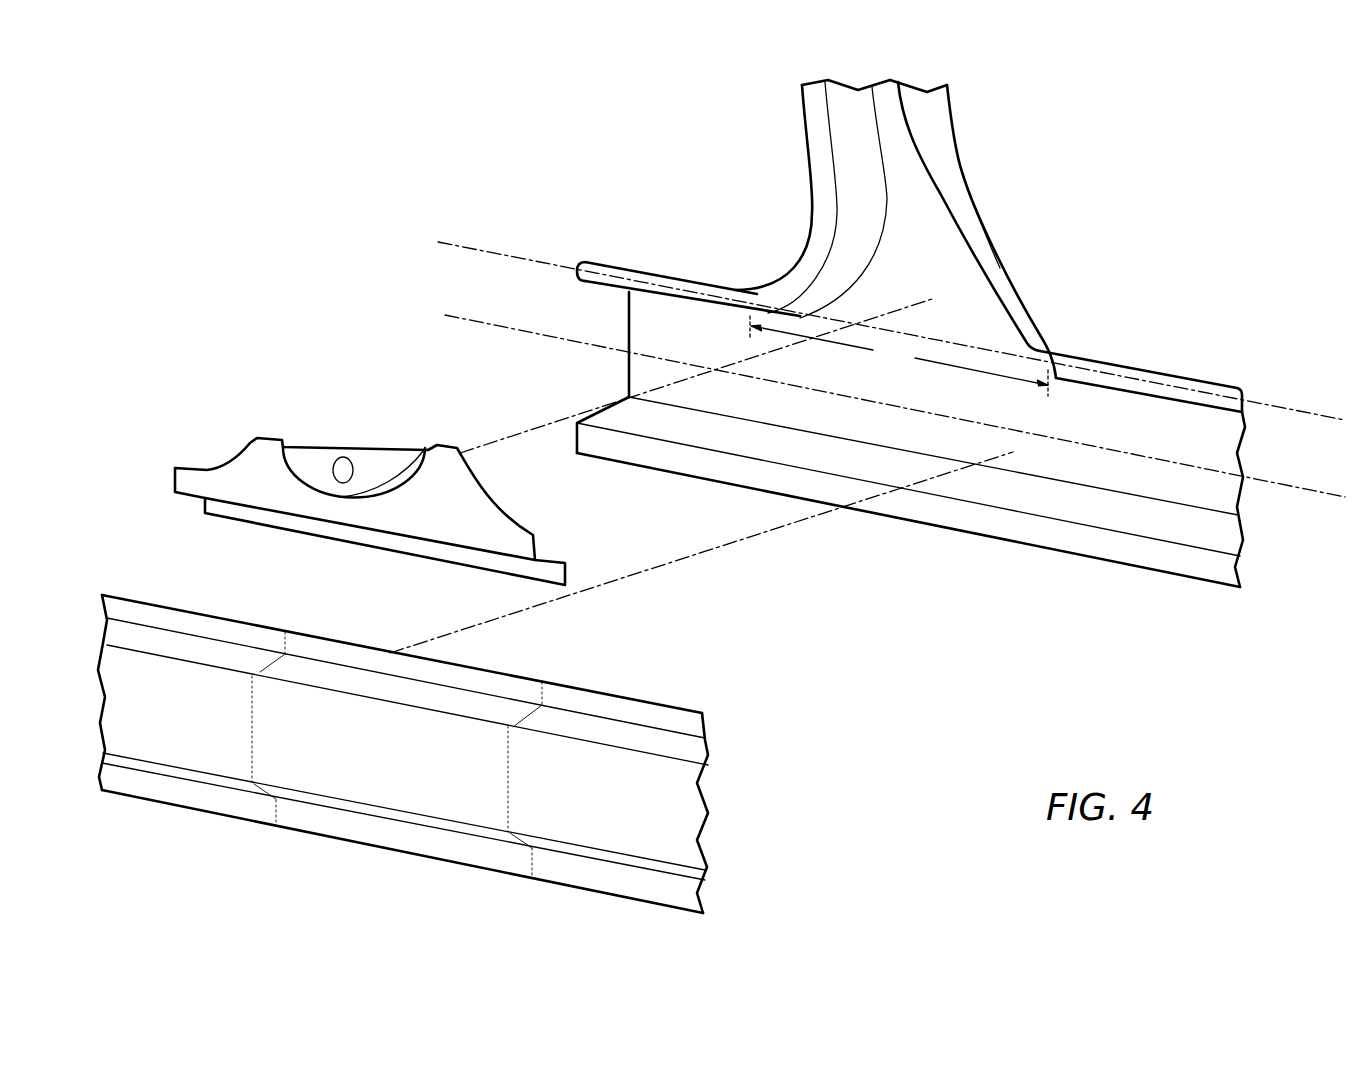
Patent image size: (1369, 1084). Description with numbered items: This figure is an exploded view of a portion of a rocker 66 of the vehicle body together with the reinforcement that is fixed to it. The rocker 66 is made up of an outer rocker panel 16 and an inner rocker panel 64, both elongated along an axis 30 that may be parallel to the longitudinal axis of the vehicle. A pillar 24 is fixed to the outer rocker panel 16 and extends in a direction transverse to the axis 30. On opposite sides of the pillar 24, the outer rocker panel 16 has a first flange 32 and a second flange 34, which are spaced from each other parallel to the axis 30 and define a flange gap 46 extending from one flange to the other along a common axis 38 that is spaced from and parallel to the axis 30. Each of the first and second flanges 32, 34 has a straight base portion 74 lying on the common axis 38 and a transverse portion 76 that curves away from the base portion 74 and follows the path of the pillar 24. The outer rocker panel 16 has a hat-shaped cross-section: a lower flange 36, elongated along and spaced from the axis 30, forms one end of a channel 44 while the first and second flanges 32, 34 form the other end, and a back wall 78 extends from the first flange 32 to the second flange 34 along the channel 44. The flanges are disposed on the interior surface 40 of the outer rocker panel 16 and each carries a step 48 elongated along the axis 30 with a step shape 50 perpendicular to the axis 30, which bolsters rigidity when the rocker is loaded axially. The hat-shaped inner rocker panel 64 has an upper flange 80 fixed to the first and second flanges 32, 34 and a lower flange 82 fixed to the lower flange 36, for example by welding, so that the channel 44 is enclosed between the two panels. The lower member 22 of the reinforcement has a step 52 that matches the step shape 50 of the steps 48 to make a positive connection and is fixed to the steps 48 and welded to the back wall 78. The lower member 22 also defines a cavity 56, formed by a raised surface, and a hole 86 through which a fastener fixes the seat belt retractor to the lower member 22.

The outer rocker panel 16 is at (926, 453).
The lower member 22 is at (373, 534).
The pillar 24 is at (899, 229).
The axis 30 is at (480, 323).
The first flange 32 is at (1190, 375).
The second flange 34 is at (903, 328).
The lower flange 36 is at (1195, 565).
The common axis 38 is at (480, 248).
The interior surface 40 is at (1213, 483).
The channel 44 is at (1143, 478).
The flange gap 46 is at (899, 356).
The step 48 is at (649, 302).
The step shape 50 is at (707, 305).
The step 52 is at (537, 562).
The cavity 56 is at (400, 490).
The inner rocker panel 64 is at (403, 757).
The rocker 66 is at (1017, 604).
The base portion 74 is at (583, 270).
The transverse portion 76 is at (817, 233).
The back wall 78 is at (648, 378).
The upper flange 80 is at (658, 718).
The lower flange 82 is at (595, 873).
The hole 86 is at (337, 480).